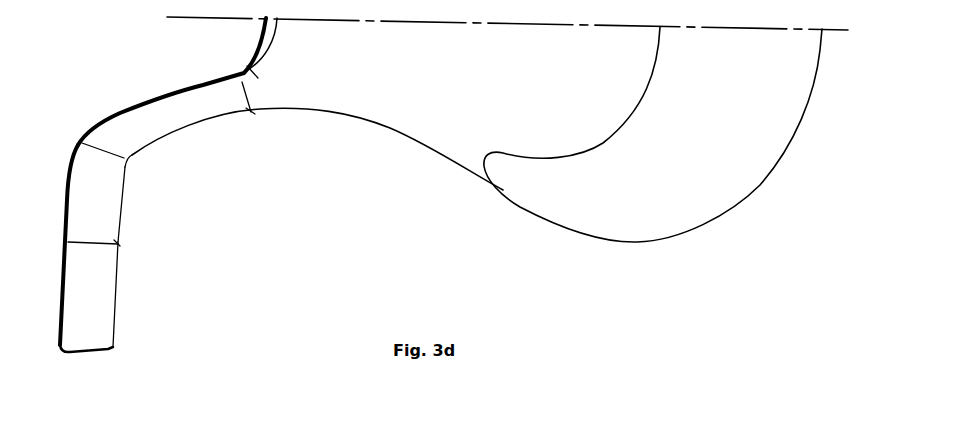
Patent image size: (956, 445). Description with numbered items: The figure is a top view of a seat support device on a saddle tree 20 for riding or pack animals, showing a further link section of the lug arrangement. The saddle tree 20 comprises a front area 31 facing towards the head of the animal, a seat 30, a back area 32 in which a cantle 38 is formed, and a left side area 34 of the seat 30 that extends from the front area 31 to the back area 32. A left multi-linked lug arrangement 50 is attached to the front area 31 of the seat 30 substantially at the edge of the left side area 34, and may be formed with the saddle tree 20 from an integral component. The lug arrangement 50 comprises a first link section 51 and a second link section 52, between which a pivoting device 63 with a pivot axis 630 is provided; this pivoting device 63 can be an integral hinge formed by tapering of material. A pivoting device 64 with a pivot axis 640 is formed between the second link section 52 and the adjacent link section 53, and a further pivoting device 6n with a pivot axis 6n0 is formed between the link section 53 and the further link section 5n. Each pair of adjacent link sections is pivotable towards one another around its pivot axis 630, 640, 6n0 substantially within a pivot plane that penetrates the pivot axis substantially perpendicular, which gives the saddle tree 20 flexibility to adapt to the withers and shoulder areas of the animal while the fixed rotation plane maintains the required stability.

The saddle tree 20 is at (504, 257).
The seat 30 is at (437, 68).
The front area 31 is at (323, 40).
The back area 32 is at (568, 70).
The left side area 34 is at (390, 127).
The cantle 38 is at (712, 108).
The left multi-linked lug arrangement 50 is at (276, 189).
The first link section 51 is at (262, 59).
The second link section 52 is at (157, 99).
The link section 53 is at (77, 192).
The pivoting device 63 is at (247, 89).
The pivot axis 630 is at (250, 116).
The pivoting device 64 is at (100, 148).
The pivot axis 640 is at (132, 156).
The further pivoting device 6n is at (100, 244).
The pivot axis 6n0 is at (120, 245).
The further link section 5n is at (80, 300).